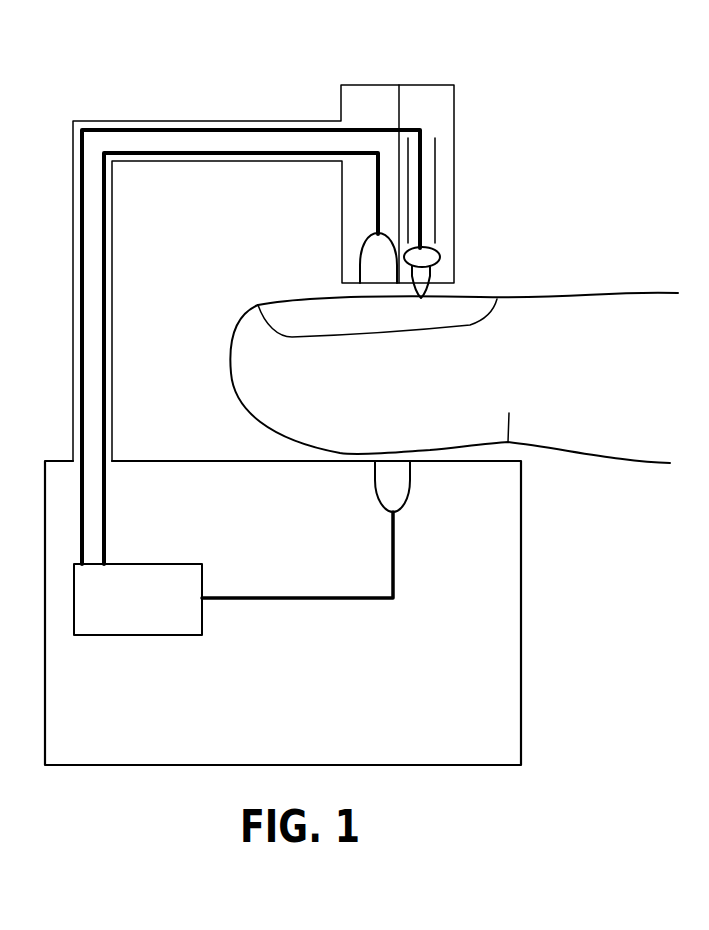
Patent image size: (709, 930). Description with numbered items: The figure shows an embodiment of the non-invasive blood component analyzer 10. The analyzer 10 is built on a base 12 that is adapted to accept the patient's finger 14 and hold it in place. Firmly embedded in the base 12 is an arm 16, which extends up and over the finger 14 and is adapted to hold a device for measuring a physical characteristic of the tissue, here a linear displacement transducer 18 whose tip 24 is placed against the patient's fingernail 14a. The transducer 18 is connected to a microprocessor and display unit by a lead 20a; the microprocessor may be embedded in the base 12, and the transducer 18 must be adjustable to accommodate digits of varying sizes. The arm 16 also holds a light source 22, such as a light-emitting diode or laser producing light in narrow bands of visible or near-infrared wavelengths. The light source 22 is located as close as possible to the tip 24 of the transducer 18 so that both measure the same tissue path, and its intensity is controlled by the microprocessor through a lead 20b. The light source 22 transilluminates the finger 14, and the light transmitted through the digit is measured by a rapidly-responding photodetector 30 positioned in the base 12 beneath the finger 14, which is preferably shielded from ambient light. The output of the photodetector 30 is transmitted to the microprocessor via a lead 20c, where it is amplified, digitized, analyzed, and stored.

The blood component analyzer 10 is at (341, 400).
The base 12 is at (510, 715).
The finger 14 is at (454, 349).
The fingernail 14a is at (418, 323).
The arm 16 is at (103, 121).
The linear displacement transducer 18 is at (428, 206).
The lead 20a is at (350, 128).
The lead 20b is at (210, 154).
The lead 20c is at (292, 602).
The light source 22 is at (370, 268).
The tip of the transducer 24 is at (423, 283).
The photodetector 30 is at (400, 487).